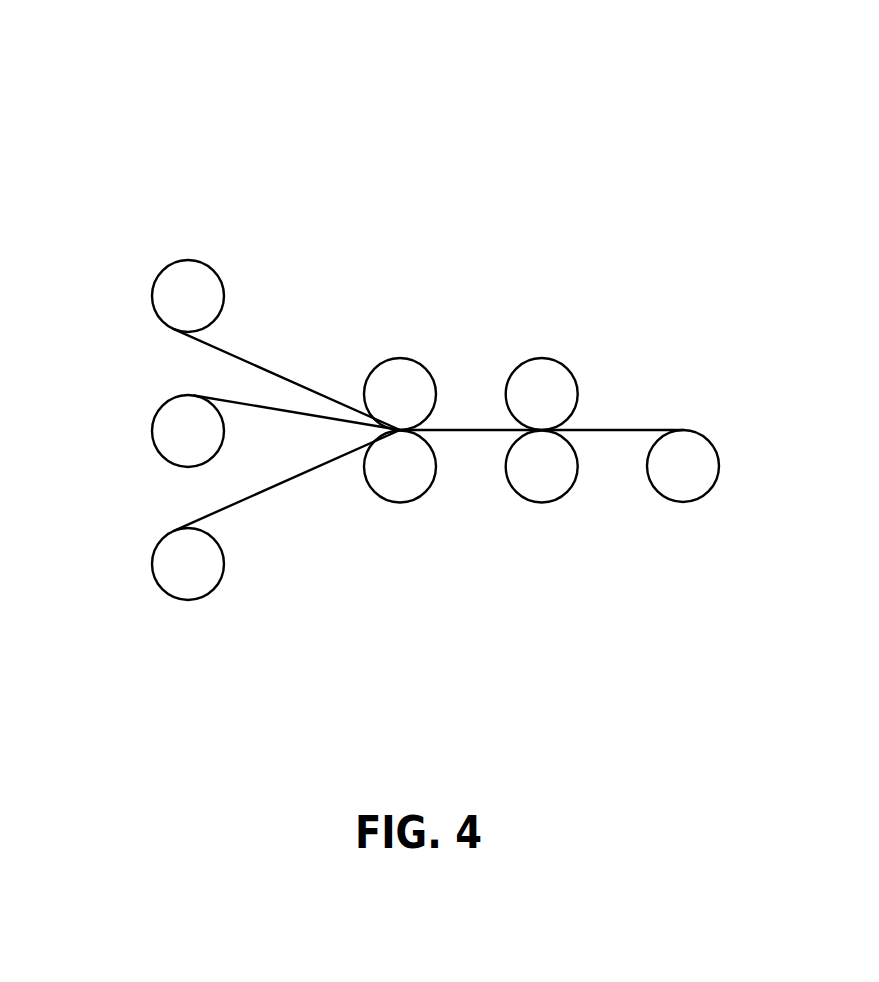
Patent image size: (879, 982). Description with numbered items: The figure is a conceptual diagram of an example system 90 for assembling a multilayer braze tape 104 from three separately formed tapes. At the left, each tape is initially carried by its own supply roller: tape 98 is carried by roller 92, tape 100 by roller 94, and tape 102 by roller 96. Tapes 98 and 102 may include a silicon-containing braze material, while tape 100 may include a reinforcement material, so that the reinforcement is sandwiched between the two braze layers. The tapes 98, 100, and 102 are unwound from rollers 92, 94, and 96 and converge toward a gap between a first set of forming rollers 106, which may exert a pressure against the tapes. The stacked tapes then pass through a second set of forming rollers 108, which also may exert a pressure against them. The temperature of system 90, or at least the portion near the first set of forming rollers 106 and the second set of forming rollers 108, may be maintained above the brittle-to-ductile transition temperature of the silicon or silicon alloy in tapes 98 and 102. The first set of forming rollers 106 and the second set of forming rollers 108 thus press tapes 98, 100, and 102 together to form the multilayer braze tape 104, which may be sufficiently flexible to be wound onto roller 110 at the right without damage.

The system 90 is at (94, 75).
The roller 92 is at (162, 288).
The roller 94 is at (162, 430).
The roller 96 is at (162, 560).
The tape 98 is at (253, 363).
The tape 100 is at (227, 398).
The tape 102 is at (270, 488).
The multilayer braze tape 104 is at (625, 430).
The first set of forming rollers 106 is at (422, 351).
The second set of forming rollers 108 is at (571, 350).
The roller 110 is at (707, 457).